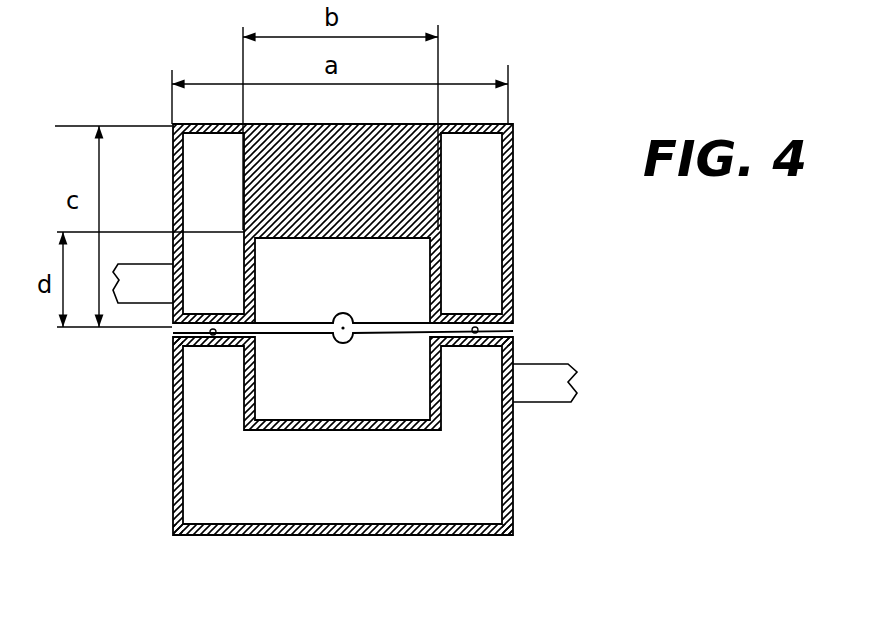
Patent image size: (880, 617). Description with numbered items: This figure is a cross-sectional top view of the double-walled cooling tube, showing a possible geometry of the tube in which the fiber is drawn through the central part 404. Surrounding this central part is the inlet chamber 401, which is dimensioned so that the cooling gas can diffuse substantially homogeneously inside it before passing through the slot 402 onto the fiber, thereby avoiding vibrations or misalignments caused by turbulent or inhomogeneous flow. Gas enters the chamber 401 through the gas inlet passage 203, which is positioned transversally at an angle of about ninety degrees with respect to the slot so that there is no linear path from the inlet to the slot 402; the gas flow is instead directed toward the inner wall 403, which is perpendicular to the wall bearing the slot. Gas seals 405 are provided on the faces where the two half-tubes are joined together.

The gas inlet passage 203 is at (545, 395).
The inlet chamber 401 is at (248, 493).
The slot 402 is at (342, 430).
The inner wall 403 is at (243, 400).
The central part 404 is at (413, 285).
The gas seal 405 is at (478, 329).